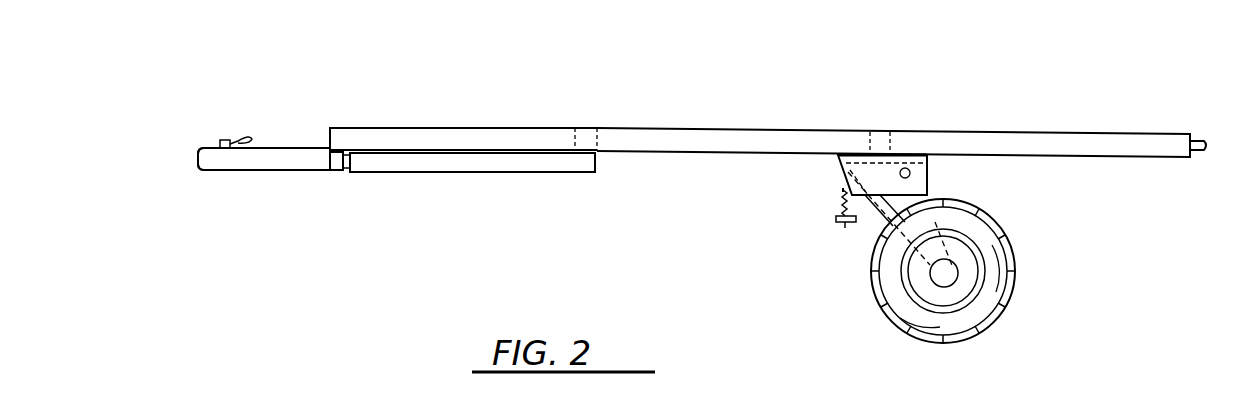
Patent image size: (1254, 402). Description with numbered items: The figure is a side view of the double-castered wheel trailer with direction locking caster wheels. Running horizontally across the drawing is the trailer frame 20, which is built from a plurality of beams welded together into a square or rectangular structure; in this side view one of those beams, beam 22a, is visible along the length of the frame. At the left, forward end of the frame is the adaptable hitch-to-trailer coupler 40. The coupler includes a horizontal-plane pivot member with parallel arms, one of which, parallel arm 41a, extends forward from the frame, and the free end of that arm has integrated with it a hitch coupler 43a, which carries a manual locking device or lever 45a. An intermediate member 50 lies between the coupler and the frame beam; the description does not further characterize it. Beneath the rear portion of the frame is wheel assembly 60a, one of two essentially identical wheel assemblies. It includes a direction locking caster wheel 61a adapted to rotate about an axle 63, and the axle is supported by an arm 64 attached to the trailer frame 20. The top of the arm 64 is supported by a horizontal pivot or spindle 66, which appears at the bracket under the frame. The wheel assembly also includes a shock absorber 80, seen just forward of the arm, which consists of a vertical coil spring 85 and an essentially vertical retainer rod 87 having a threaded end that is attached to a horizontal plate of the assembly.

The trailer frame 20 is at (1015, 122).
The beam 22a is at (1127, 147).
The adaptable hitch-to-trailer coupler 40 is at (261, 148).
The parallel arm 41a is at (290, 160).
The hitch coupler 43a is at (213, 158).
The manual locking device or lever 45a is at (232, 145).
The telescoping section 50 is at (455, 180).
The wheel assembly 60a is at (920, 265).
The direction locking caster wheel 61a is at (1013, 280).
The axle 63 is at (930, 277).
The arm 64 is at (867, 230).
The horizontal pivot or spindle 66 is at (912, 178).
The shock absorber 80 is at (782, 228).
The vertical coil spring 85 is at (840, 200).
The retainer rod 87 is at (847, 223).